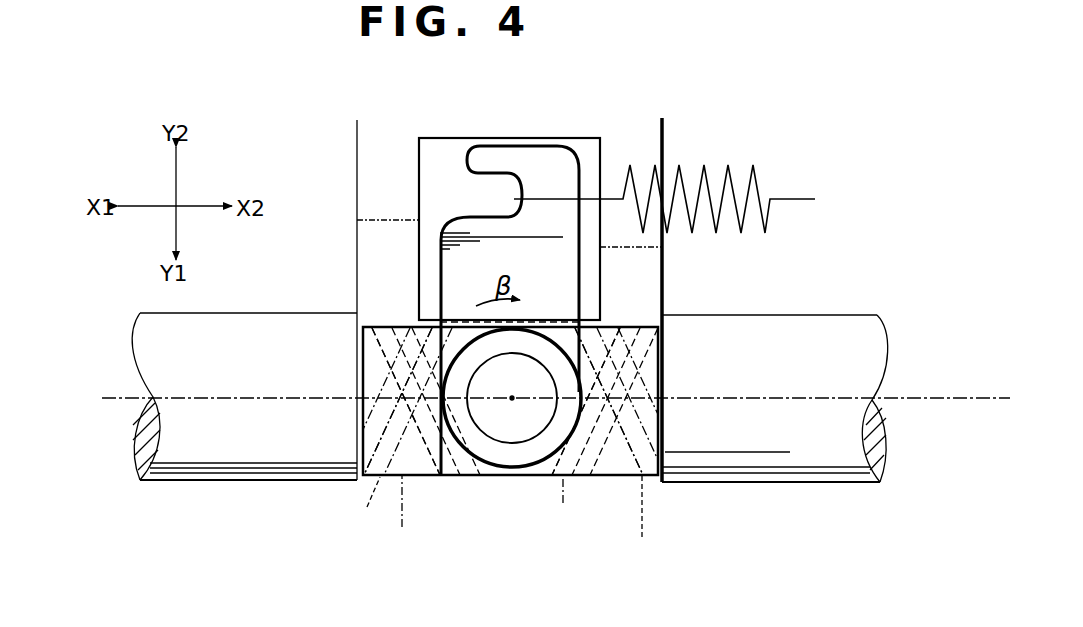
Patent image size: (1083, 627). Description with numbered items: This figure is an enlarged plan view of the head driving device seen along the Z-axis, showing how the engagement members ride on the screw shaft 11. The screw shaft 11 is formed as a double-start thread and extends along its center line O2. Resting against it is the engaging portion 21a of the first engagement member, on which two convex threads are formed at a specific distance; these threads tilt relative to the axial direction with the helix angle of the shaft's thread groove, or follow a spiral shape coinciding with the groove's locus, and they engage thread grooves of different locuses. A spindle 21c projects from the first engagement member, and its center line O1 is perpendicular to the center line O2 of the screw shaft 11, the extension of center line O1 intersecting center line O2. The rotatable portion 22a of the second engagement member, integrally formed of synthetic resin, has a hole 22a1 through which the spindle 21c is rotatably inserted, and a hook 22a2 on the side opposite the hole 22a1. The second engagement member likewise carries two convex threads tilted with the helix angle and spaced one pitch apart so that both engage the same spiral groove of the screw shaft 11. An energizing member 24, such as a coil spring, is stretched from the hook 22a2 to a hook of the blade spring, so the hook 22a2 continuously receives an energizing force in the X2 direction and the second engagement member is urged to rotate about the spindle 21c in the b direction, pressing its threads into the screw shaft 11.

The screw shaft 11 is at (808, 347).
The center line of the screw shaft O2 is at (197, 397).
The center line of the spindle O1 is at (512, 398).
The engaging portion 21a is at (650, 345).
The spindle 21c is at (488, 423).
The rotatable portion 22a is at (452, 262).
The hole 22a1 is at (503, 457).
The hook 22a2 is at (485, 186).
The energizing member 24 is at (727, 167).